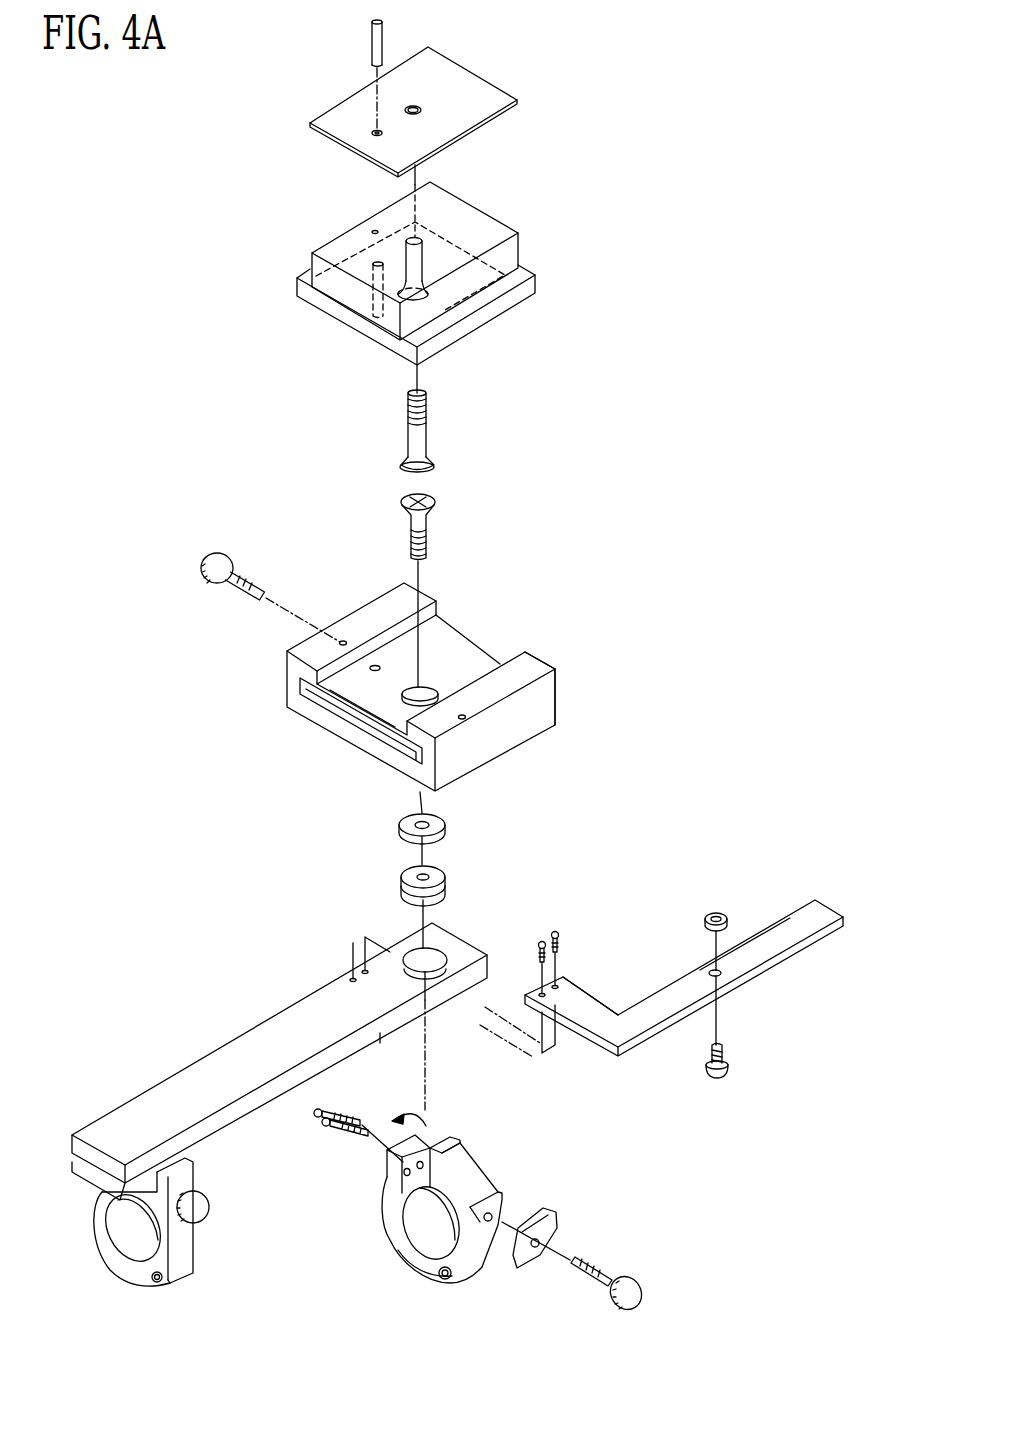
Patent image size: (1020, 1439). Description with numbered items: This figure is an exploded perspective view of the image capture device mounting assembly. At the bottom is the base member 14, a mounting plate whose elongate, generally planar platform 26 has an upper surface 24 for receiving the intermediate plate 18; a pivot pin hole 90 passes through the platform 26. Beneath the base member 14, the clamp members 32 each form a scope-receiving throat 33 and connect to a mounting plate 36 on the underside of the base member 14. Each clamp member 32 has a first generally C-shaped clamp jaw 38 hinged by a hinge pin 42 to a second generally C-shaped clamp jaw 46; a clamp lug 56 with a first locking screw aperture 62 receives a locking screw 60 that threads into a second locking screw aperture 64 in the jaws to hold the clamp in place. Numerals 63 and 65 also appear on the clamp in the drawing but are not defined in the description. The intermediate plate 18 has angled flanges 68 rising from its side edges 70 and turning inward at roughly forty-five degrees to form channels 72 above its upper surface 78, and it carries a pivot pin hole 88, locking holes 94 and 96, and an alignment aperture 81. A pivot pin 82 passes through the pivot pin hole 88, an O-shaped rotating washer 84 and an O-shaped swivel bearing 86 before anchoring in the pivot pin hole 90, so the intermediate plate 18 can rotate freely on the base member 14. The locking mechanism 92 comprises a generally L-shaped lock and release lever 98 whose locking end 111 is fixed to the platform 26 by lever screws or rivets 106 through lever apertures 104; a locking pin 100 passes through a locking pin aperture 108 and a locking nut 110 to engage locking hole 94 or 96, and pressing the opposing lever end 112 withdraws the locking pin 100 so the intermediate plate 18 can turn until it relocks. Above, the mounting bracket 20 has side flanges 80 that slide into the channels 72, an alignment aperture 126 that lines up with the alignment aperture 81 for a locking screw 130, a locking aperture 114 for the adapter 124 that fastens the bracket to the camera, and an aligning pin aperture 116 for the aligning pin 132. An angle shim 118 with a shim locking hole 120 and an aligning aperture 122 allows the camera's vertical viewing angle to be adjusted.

The base member 14 is at (306, 1026).
The intermediate mounting plate 18 is at (395, 698).
The mounting bracket 20 is at (408, 280).
The upper surface 24 is at (175, 1094).
The platform 26 is at (279, 1053).
The clamp member 32 is at (455, 1211).
The scope-receiving throat 33 is at (413, 1238).
The mounting plate 36 is at (92, 1175).
The first generally C-shaped clamp jaw 38 is at (387, 1210).
The hinge pin 42 is at (442, 1277).
The second generally C-shaped clamp jaw 46 is at (472, 1178).
The clamp lug 56 is at (403, 1173).
The locking screw 60 is at (610, 1270).
The first locking screw aperture 62 is at (548, 1232).
The screws 63 is at (330, 1123).
The threaded second locking screw aperture 64 is at (500, 1205).
The clamp block 65 is at (400, 1177).
The angled flange 68 is at (532, 660).
The side edges 70 is at (288, 674).
The channel 72 is at (302, 687).
The upper surface 78 is at (352, 700).
The side flanges 80 is at (300, 278).
The alignment aperture 81 is at (340, 643).
The pivot pin 82 is at (413, 527).
The O-shaped rotating washer 84 is at (443, 823).
The O-shaped swivel bearing 86 is at (398, 885).
The pivot pin hole 88 is at (402, 700).
The pivot pin hole 90 is at (435, 953).
The locking mechanism 92 is at (692, 976).
The locking hole 94 is at (375, 664).
The locking hole 96 is at (463, 718).
The lock and release lever 98 is at (825, 925).
The locking pin 100 is at (728, 1062).
The lever apertures 104 is at (566, 985).
The lever screws or rivets 106 is at (555, 942).
The locking pin aperture 108 is at (722, 975).
The locking nut 110 is at (705, 919).
The locking end 111 is at (588, 1013).
The lever end 112 is at (773, 943).
The locking aperture 114 is at (467, 312).
The aligning pin aperture 116 is at (375, 262).
The angle shim 118 is at (498, 78).
The shim locking hole 120 is at (420, 113).
The aligning aperture 122 is at (373, 134).
The adapter 124 is at (417, 437).
The alignment aperture 126 is at (372, 230).
The locking screw 130 is at (202, 572).
The aligning pin 132 is at (372, 42).